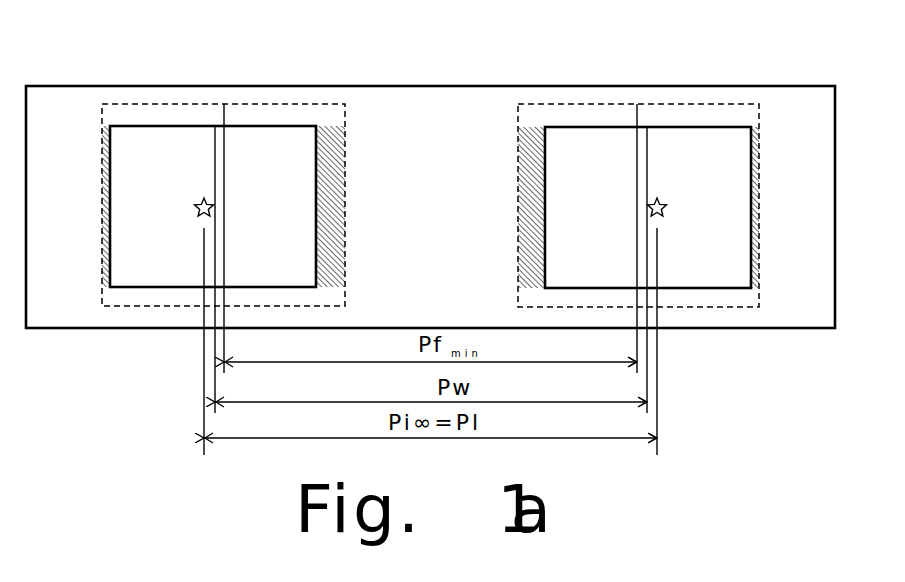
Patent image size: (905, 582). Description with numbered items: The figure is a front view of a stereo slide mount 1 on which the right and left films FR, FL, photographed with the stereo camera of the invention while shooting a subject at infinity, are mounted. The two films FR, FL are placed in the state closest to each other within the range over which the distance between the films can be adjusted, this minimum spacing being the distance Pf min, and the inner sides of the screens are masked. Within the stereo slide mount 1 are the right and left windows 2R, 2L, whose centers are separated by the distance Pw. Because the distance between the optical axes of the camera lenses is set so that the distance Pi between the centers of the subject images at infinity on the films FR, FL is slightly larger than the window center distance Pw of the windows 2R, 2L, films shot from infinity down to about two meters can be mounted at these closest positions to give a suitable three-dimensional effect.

The stereo slide mount 1 is at (430, 84).
The left film FL is at (112, 102).
The right film FR is at (708, 103).
The left window 2L is at (270, 127).
The right window 2R is at (596, 127).